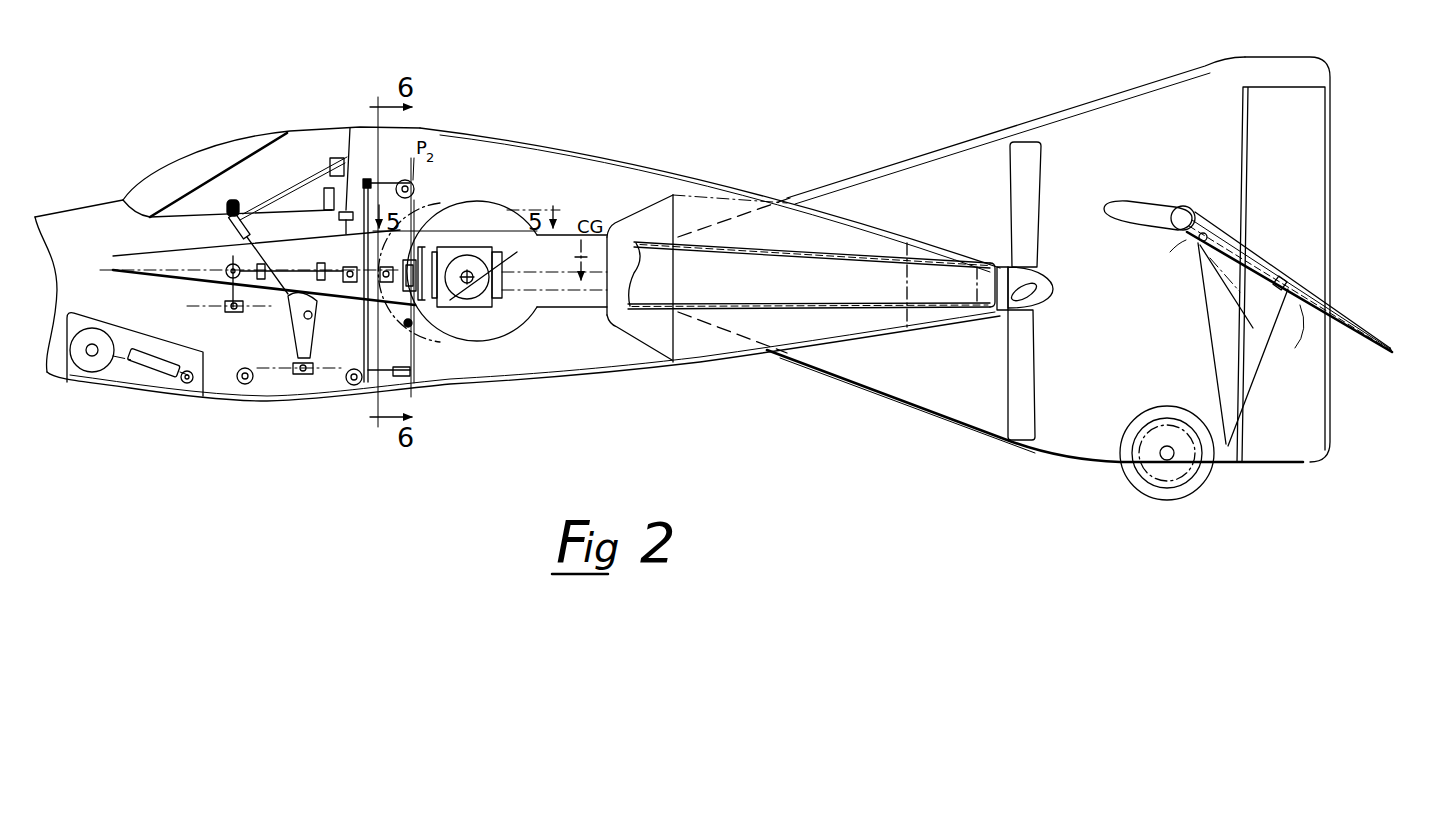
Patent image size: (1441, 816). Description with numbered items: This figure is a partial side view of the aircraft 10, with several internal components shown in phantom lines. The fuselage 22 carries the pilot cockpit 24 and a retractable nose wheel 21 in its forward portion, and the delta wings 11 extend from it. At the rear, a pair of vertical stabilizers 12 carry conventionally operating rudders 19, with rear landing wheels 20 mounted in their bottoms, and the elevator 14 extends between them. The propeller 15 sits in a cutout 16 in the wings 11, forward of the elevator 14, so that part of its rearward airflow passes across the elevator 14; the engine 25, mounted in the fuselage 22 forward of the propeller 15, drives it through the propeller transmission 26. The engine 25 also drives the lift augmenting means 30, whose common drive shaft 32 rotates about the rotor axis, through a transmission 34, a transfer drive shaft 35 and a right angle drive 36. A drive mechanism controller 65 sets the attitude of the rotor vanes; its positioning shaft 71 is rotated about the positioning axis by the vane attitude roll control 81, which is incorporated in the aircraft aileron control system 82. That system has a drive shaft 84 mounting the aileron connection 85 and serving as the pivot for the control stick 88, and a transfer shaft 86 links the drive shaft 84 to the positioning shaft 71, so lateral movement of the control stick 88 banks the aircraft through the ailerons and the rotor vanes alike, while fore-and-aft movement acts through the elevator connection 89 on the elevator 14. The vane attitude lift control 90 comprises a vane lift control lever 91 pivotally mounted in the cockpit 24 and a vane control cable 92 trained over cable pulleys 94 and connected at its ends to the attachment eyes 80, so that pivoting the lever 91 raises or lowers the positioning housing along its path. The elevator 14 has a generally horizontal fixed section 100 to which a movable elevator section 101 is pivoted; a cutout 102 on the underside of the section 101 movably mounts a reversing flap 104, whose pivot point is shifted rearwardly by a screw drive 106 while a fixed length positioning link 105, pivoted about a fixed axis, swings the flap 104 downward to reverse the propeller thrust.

The aircraft 10 is at (554, 132).
The delta wings 11 is at (127, 254).
The vertical stabilizers 12 is at (1113, 100).
The elevator 14 is at (1155, 197).
The propeller 15 is at (1043, 188).
The cutout 16 is at (1003, 265).
The rudders 19 is at (1328, 113).
The rear landing wheels 20 is at (1194, 493).
The retractable nose wheel 21 is at (108, 310).
The fuselage 22 is at (478, 148).
The pilot cockpit 24 is at (291, 133).
The engine 25 is at (789, 193).
The propeller transmission 26 is at (950, 250).
The lift augmenting means 30 is at (497, 204).
The common drive shaft 32 is at (462, 290).
The transmission 34 is at (637, 218).
The transfer drive shaft 35 is at (586, 295).
The right angle drive 36 is at (463, 264).
The drive mechanism controller 65 is at (412, 238).
The positioning shaft 71 is at (408, 262).
The attachment eyes 80 is at (428, 208).
The vane attitude roll control 81 is at (380, 285).
The aircraft aileron control system 82 is at (345, 258).
The drive shaft 84 is at (300, 262).
The aileron connection 85 is at (322, 234).
The transfer shaft 86 is at (360, 293).
The control stick 88 is at (225, 250).
The elevator connection 89 is at (233, 313).
The vane attitude lift control 90 is at (290, 387).
The vane lift control lever 91 is at (298, 333).
The vane control cable 92 is at (297, 396).
The cable pulleys 94 is at (365, 184).
The fixed section 100 is at (1143, 228).
The movable elevator section 101 is at (1365, 323).
The cutout 102 is at (1262, 254).
The reversing flap 104 is at (1260, 358).
The fixed length positioning link 105 is at (1240, 330).
The screw drive 106 is at (1240, 237).